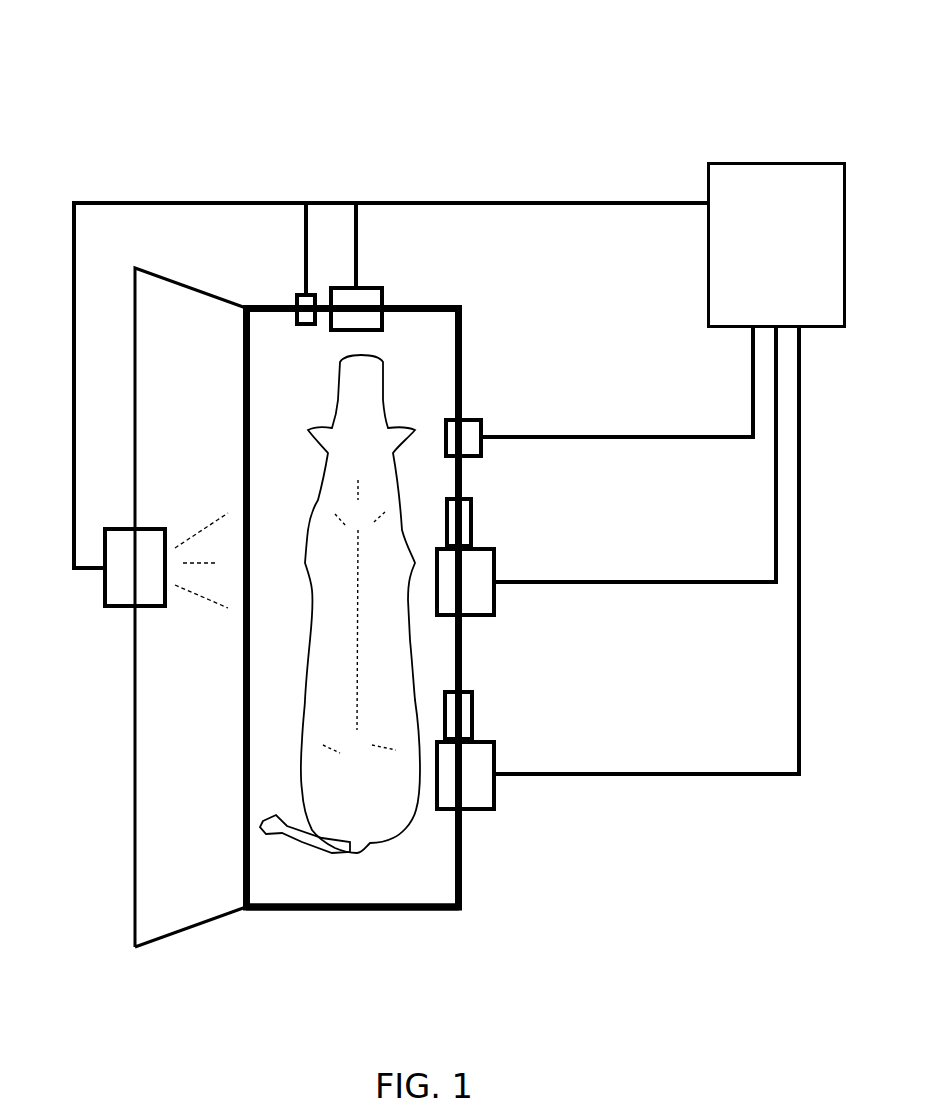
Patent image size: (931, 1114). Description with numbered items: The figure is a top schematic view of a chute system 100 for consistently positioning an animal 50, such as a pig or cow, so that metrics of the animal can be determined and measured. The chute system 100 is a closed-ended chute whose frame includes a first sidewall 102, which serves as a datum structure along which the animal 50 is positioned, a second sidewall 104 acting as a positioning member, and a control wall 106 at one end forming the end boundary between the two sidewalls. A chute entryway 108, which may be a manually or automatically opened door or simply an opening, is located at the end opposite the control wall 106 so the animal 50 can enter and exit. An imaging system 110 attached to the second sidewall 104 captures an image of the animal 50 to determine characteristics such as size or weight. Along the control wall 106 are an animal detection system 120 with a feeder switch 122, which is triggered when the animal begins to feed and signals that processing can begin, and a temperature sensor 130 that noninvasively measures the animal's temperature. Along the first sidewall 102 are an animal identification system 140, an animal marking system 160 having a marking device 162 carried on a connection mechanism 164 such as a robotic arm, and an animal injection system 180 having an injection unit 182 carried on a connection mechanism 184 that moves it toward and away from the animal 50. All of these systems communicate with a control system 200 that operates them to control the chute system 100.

The chute system 100 is at (150, 122).
The first sidewall 102 is at (461, 360).
The second sidewall 104 is at (170, 283).
The control wall 106 is at (400, 303).
The chute entryway 108 is at (395, 912).
The imaging system 110 is at (115, 608).
The animal detection system 120 is at (377, 220).
The feeder switch 122 is at (343, 283).
The temperature sensor 130 is at (306, 327).
The animal identification system 140 is at (468, 418).
The animal marking system 160 is at (562, 482).
The marking device 162 is at (480, 547).
The connection mechanism 164 is at (463, 497).
The animal injection system 180 is at (567, 686).
The injection unit 182 is at (480, 740).
The connection mechanism 184 is at (465, 690).
The control system 200 is at (795, 264).
The animal 50 is at (342, 763).